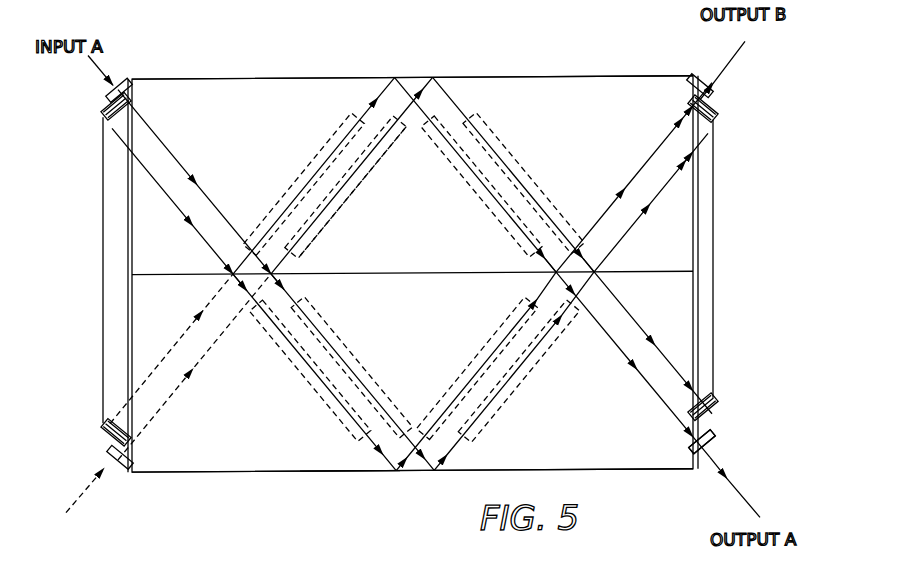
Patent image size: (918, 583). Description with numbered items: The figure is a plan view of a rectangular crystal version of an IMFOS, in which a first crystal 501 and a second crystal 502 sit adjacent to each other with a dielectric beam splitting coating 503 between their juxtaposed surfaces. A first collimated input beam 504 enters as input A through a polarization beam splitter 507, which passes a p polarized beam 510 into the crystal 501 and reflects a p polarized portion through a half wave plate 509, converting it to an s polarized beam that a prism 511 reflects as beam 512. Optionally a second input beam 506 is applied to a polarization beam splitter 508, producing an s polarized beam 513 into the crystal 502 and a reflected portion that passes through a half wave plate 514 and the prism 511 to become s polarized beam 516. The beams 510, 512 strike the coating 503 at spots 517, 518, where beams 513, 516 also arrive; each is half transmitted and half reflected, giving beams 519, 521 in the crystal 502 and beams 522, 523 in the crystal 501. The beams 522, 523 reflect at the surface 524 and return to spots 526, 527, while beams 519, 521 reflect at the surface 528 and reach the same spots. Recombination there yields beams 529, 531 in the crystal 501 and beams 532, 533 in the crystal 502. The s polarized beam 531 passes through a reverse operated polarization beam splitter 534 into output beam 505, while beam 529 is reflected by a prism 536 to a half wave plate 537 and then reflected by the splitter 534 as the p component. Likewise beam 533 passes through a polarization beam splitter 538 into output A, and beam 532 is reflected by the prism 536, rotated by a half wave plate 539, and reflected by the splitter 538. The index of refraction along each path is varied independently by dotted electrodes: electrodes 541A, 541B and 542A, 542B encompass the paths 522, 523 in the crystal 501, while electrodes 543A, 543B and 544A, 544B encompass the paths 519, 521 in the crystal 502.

The first crystal 501 is at (292, 79).
The second crystal 502 is at (236, 473).
The dielectric beam splitting coating 503 is at (444, 278).
The first collimated input beam 504 is at (99, 77).
The output beam 505 is at (723, 62).
The second input beam 506 is at (83, 498).
The polarization beam splitter 507 is at (123, 85).
The polarization beam splitter 508 is at (122, 473).
The half wave plate 509 is at (106, 108).
The p polarized beam 510 is at (207, 198).
The prism 511 is at (103, 195).
The s polarized beam 512 is at (184, 216).
The s polarized beam 513 is at (180, 383).
The half wave plate 514 is at (104, 449).
The s polarized beam 516 is at (188, 330).
The spot 517 is at (279, 271).
The spot 518 is at (231, 273).
The beam 519 is at (412, 415).
The beam 521 is at (379, 452).
The beam 522 is at (394, 122).
The beam 523 is at (380, 98).
The surface 524 is at (553, 79).
The spot 526 is at (597, 269).
The spot 527 is at (553, 277).
The surface 528 is at (322, 473).
The s polarized beam 529 is at (614, 264).
The s polarized beam 531 is at (647, 160).
The s polarized beam 532 is at (652, 348).
The s polarized beam 533 is at (653, 409).
The polarization beam splitter 534 is at (703, 86).
The prism 536 is at (715, 219).
The half wave plate 537 is at (712, 103).
The polarization beam splitter 538 is at (707, 453).
The half wave plate 539 is at (715, 433).
The electrode 541A is at (338, 216).
The electrode 541B is at (528, 173).
The electrode 542A is at (307, 167).
The electrode 542B is at (477, 188).
The electrode 543A is at (360, 367).
The electrode 543B is at (502, 413).
The electrode 544A is at (292, 367).
The electrode 544B is at (473, 362).